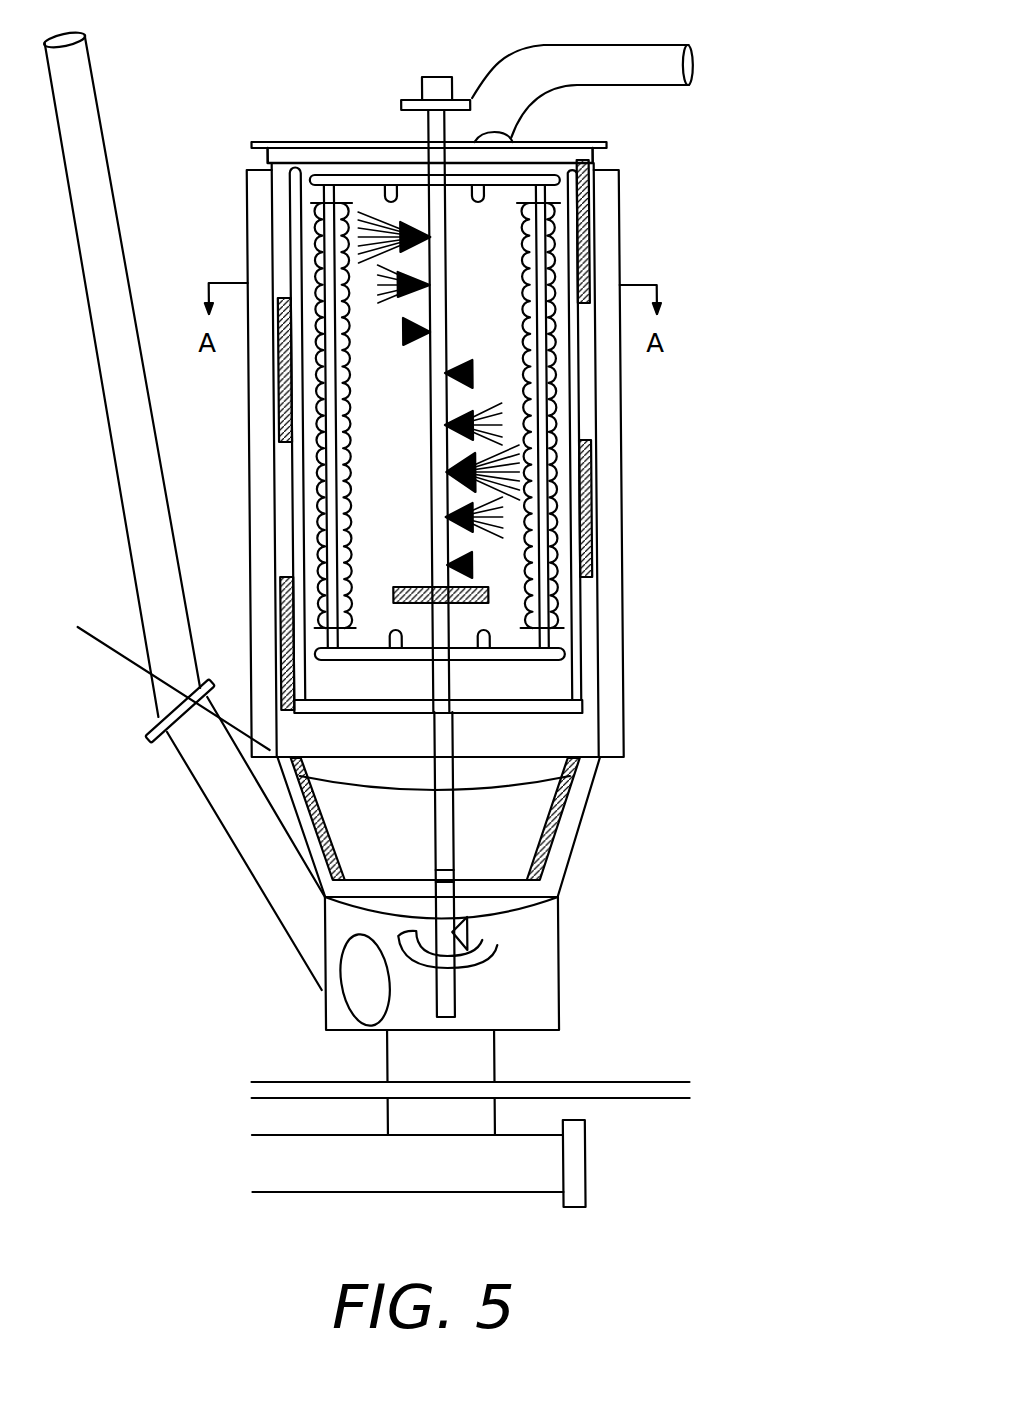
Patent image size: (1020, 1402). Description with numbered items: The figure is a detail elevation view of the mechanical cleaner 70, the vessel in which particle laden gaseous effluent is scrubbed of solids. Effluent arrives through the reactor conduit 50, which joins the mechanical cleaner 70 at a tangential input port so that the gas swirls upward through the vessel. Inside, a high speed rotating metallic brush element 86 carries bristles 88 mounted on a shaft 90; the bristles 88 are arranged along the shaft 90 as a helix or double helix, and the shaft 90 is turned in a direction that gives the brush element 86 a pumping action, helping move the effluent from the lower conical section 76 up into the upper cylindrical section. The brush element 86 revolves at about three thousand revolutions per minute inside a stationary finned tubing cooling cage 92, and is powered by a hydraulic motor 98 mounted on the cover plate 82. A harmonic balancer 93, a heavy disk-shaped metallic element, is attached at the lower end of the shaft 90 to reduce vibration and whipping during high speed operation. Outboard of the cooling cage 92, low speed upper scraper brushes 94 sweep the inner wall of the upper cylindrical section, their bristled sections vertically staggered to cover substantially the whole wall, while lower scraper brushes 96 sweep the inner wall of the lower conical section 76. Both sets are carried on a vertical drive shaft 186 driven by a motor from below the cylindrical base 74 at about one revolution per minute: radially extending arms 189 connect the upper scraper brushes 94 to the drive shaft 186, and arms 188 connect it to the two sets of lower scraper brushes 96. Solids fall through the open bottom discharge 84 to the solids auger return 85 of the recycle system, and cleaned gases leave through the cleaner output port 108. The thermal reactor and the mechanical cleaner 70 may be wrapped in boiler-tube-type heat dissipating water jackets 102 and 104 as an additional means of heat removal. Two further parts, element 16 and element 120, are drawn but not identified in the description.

The housing flange 16 is at (592, 740).
The reactor conduit 50 is at (148, 484).
The mechanical cleaner 70 is at (638, 648).
The cylindrical base 74 is at (539, 998).
The lower conical section 76 is at (555, 852).
The cover plate 82 is at (358, 155).
The open bottom discharge 84 is at (480, 1066).
The solids auger return 85 is at (268, 1149).
The brush element 86 is at (444, 312).
The bristles 88 is at (449, 420).
The shaft 90 is at (441, 475).
The finned cooling cage 92 is at (352, 568).
The harmonic balancer 93 is at (453, 603).
The upper scraper brushes 94 is at (592, 540).
The lower scraper brushes 96 is at (314, 833).
The hydraulic motor 98 is at (436, 88).
The heat dissipating water jacket 102 is at (580, 61).
The heat dissipating water jacket 104 is at (615, 427).
The cleaner output port 108 is at (520, 130).
The outlet pipe 120 is at (274, 1085).
The vertical drive shaft 186 is at (458, 845).
The arms 188 is at (463, 887).
The radially extending arms 189 is at (396, 706).